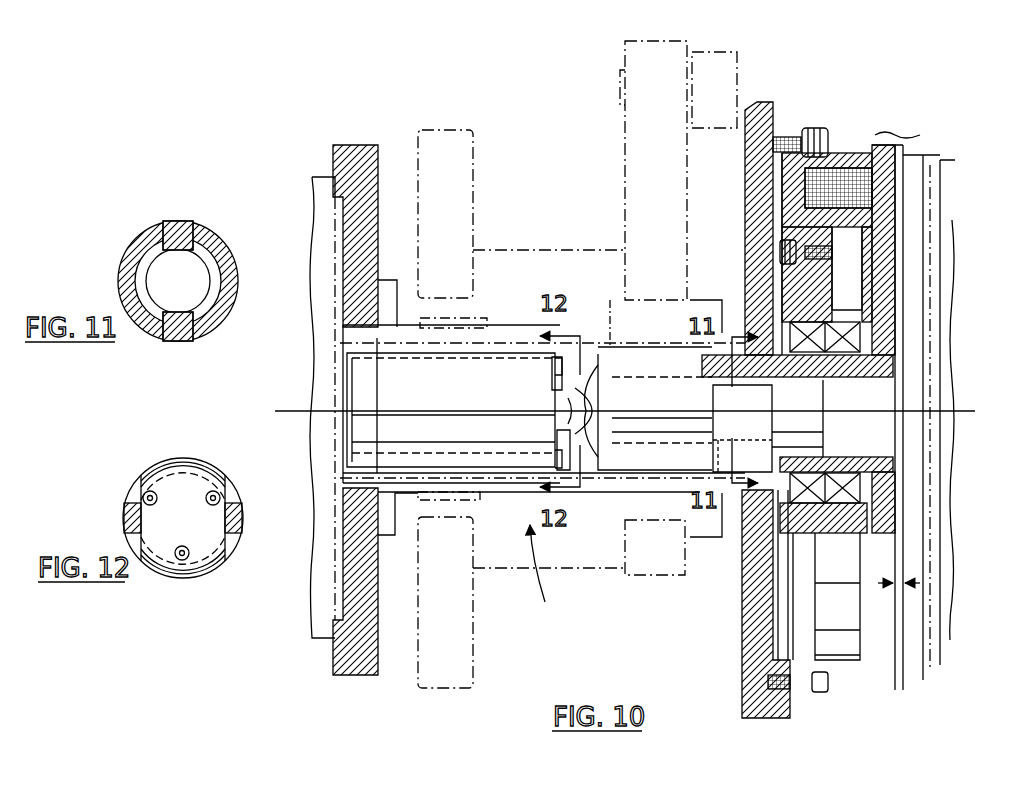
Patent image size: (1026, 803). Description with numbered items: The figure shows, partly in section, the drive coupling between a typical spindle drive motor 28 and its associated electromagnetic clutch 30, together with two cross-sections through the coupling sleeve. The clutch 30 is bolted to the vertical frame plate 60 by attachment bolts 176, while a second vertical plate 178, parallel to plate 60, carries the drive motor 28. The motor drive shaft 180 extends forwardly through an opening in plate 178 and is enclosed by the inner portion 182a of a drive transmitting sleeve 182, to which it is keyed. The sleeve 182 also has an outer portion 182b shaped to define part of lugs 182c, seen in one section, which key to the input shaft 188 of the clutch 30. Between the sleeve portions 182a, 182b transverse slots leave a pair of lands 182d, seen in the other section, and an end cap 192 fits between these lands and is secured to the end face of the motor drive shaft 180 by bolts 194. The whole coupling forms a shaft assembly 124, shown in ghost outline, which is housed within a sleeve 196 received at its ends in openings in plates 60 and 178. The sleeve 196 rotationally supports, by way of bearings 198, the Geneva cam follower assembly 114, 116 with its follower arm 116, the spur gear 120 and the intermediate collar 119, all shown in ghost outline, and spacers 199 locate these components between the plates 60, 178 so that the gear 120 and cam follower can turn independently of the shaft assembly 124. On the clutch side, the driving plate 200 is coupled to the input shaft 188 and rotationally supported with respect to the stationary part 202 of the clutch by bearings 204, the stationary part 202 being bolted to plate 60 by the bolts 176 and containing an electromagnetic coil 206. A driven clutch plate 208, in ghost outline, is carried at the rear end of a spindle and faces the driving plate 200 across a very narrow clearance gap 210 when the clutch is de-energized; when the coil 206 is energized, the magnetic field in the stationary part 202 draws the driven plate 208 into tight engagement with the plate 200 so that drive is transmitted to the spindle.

In FIG. 10, the spindle drive motor 28 is at (315, 203).
In FIG. 10, the clutch 30 is at (903, 128).
In FIG. 10, the vertical plate 60 is at (770, 110).
In FIG. 10, the Geneva cam follower assembly 114 is at (735, 64).
In FIG. 10, the Geneva cam follower arm 116 is at (640, 46).
In FIG. 10, the collar 119 is at (545, 248).
In FIG. 10, the driving gear 120 is at (452, 150).
In FIG. 10, the shaft assembly 124 is at (496, 602).
In FIG. 10, the attachment bolts 176 is at (822, 140).
In FIG. 10, the second vertical plate 178 is at (356, 150).
In FIG. 10, the motor drive shaft 180 is at (345, 385).
In FIG. 10, the drive transmitting sleeve 182 is at (454, 366).
In FIG. 10, the inner sleeve portion 182a is at (445, 442).
In FIG. 10, the outer sleeve portion 182b is at (680, 407).
In FIG. 11, the lugs 182c is at (175, 222).
In FIG. 12, the lands 182d is at (124, 524).
In FIG. 10, the clutch input shaft 188 is at (850, 350).
In FIG. 11, the clutch input shaft 188 is at (118, 282).
In FIG. 12, the clutch input shaft 188 is at (130, 482).
In FIG. 10, the end cap 192 is at (548, 388).
In FIG. 12, the end cap 192 is at (182, 488).
In FIG. 10, the bolts 194 is at (550, 427).
In FIG. 12, the bolts 194 is at (182, 548).
In FIG. 10, the sleeve 196 is at (610, 322).
In FIG. 10, the bearings 198 is at (458, 318).
In FIG. 10, the spacers 199 is at (400, 282).
In FIG. 10, the clutch driving plate 200 is at (935, 156).
In FIG. 10, the stationary clutch part 202 is at (795, 212).
In FIG. 10, the bearings 204 is at (812, 347).
In FIG. 10, the electromagnetic coil 206 is at (910, 192).
In FIG. 10, the driven clutch plate 208 is at (913, 305).
In FIG. 10, the clearance gap 210 is at (920, 588).